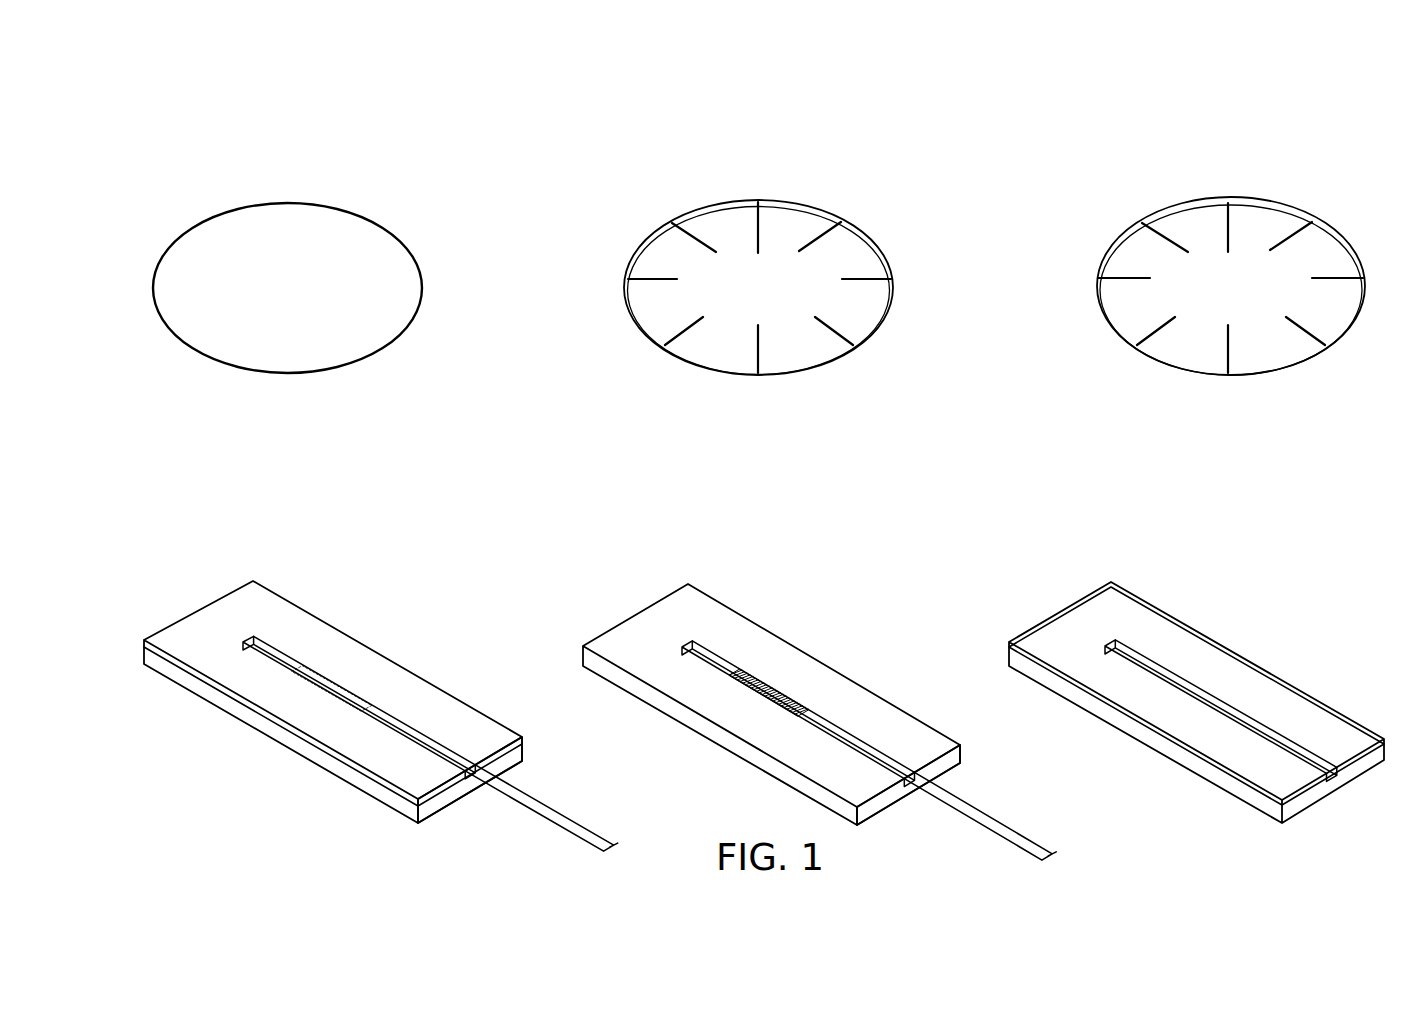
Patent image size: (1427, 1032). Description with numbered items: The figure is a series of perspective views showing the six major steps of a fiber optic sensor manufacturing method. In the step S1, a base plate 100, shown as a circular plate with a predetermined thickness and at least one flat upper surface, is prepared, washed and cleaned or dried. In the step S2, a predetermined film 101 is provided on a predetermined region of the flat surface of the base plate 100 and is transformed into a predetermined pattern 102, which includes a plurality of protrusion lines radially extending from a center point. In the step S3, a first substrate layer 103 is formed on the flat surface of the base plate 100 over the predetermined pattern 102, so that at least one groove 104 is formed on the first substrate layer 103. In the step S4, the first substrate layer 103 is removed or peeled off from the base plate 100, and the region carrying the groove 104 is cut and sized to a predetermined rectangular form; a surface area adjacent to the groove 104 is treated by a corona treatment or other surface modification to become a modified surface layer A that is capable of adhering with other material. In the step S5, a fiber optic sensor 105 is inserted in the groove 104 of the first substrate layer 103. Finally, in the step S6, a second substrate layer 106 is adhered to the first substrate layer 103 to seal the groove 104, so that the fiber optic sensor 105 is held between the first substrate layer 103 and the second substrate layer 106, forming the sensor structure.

The base plate 100 is at (387, 253).
The predetermined film 101 is at (877, 242).
The predetermined pattern 102 is at (657, 278).
The first substrate layer 103 is at (1325, 223).
The groove 104 is at (1320, 753).
The fiber optic sensor 105 is at (808, 715).
The second substrate layer 106 is at (246, 597).
The modified surface layer A is at (1212, 633).
The step of preparing a base plate S1 is at (293, 195).
The step of providing a predetermined film S2 is at (738, 195).
The step of forming a first substrate layer S3 is at (1218, 193).
The step of removing the first substrate layer S4 is at (1162, 577).
The step of inserting a fiber optic sensor S5 is at (704, 567).
The step of adhering a second substrate layer S6 is at (308, 559).